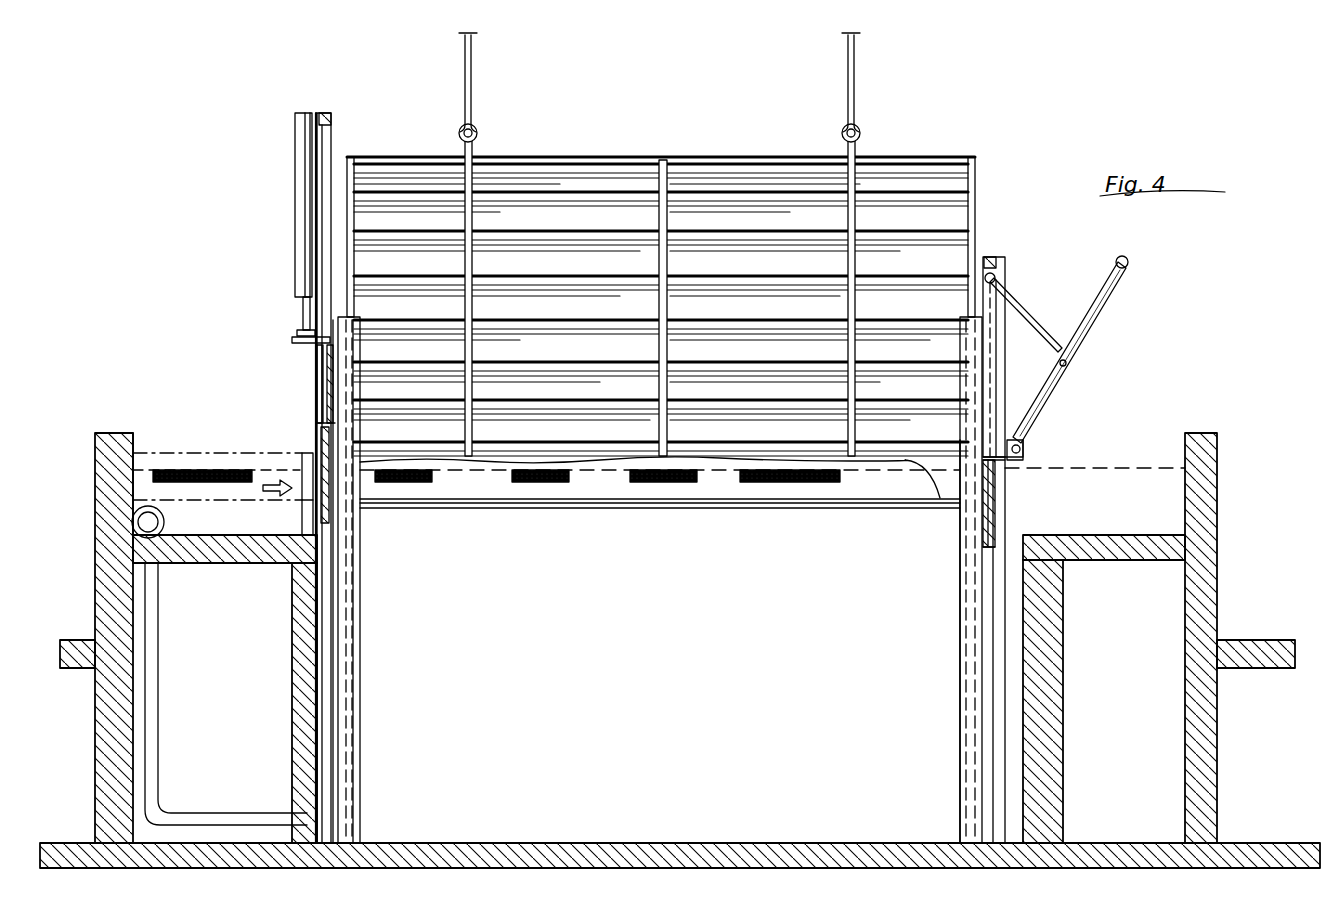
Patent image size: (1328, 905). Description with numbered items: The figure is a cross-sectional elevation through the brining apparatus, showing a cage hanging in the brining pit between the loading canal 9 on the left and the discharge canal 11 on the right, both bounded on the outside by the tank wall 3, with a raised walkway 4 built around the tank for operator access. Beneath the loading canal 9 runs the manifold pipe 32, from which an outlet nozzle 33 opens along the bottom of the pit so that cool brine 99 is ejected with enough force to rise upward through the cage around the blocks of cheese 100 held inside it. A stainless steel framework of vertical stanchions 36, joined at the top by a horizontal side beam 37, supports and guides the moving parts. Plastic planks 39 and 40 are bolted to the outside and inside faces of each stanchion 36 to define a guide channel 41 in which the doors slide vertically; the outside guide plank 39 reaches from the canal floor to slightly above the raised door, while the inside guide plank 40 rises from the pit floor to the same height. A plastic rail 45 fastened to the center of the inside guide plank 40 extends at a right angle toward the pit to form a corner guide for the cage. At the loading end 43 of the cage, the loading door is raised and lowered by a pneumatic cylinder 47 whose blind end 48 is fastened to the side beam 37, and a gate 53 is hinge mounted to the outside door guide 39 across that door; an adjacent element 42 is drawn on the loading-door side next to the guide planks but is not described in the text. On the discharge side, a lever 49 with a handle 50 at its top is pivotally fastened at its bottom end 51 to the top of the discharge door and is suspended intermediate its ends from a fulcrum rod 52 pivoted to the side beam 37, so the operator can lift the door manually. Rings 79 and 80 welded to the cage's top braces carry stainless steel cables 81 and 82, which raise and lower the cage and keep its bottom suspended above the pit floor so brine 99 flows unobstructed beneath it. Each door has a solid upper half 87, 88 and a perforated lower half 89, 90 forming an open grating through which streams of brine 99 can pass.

The outside wall 3 is at (1205, 497).
The raised walkway 4 is at (78, 640).
The loading canal 9 is at (149, 413).
The discharge canal 11 is at (1140, 468).
The manifold pipe 32 is at (165, 514).
The outlet nozzle 33 is at (152, 698).
The vertical stanchion 36 is at (333, 130).
The horizontal side beam 37 is at (990, 256).
The outside guide plank 39 is at (317, 380).
The inside guide plank 40 is at (333, 792).
The guide channel 41 is at (331, 513).
The bracket plate 42 is at (328, 357).
The loading end of cage 43 is at (982, 520).
The plastic rail 45 is at (350, 713).
The pneumatic cylinder 47 is at (295, 185).
The blind end 48 is at (318, 113).
The lever 49 is at (1090, 320).
The handle 50 is at (1128, 262).
The bottom end of lever 51 is at (1025, 441).
The fulcrum rod 52 is at (297, 307).
The gate 53 is at (188, 453).
The ring 79 is at (478, 148).
The ring 80 is at (862, 148).
The stainless steel cable 81 is at (472, 43).
The stainless steel cable 82 is at (847, 55).
The upper half of loading door 87 is at (325, 370).
The upper half of discharge door 88 is at (1000, 478).
The lower half of loading door 89 is at (332, 405).
The lower half of discharge door 90 is at (990, 532).
The brine 99 is at (592, 480).
The blocks of cheese 100 is at (218, 478).